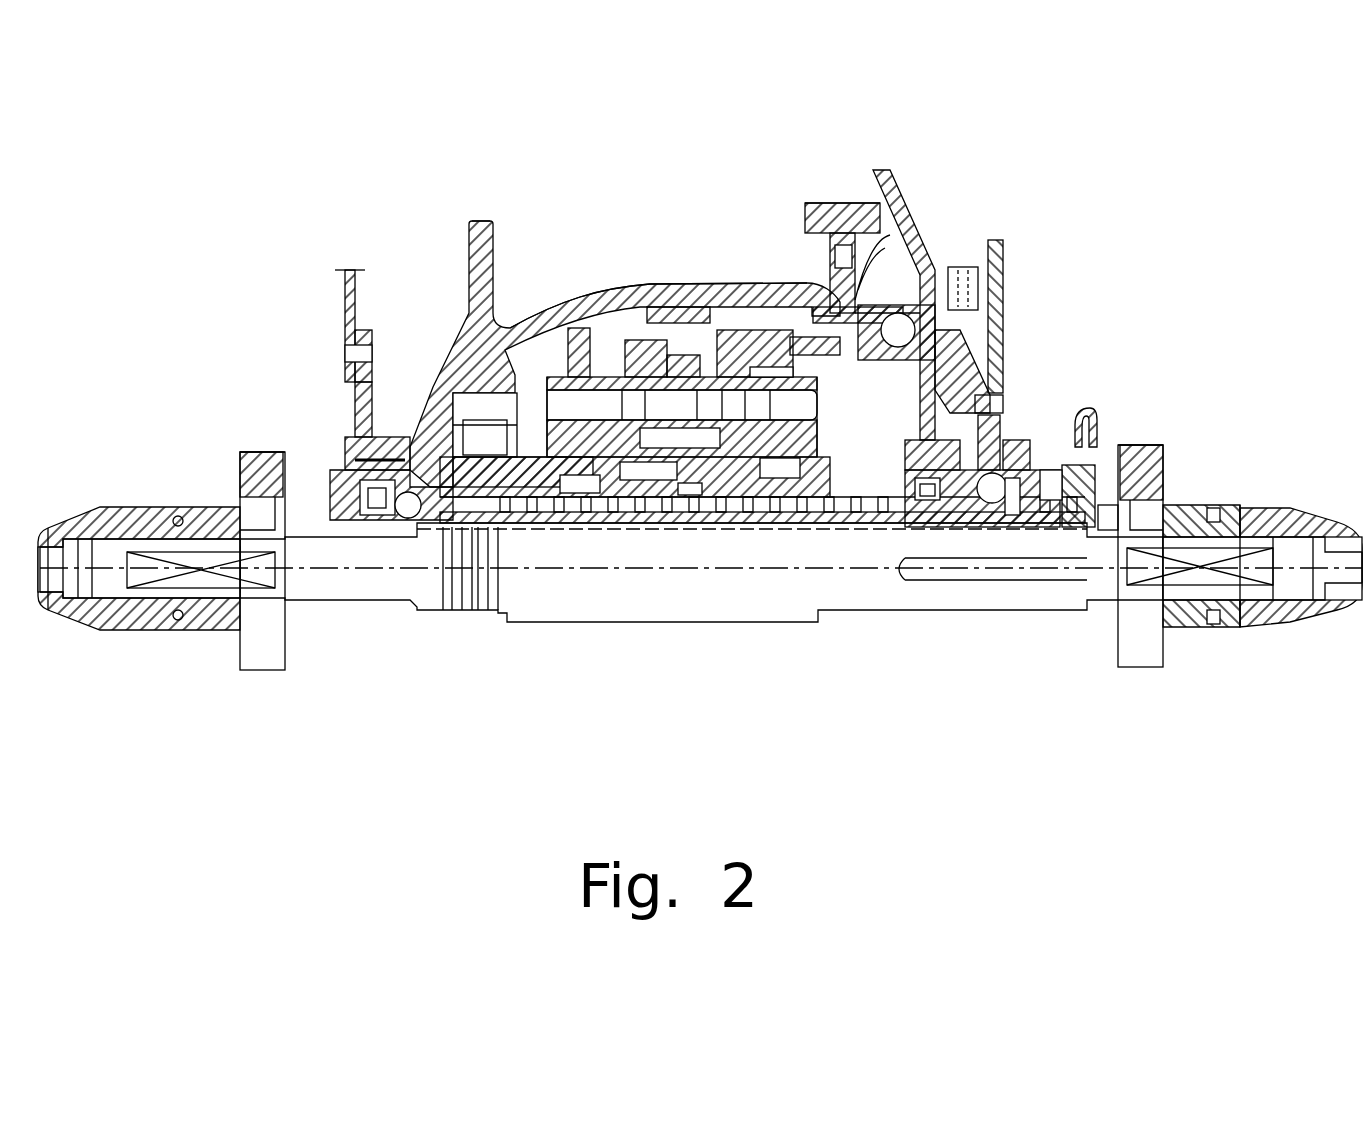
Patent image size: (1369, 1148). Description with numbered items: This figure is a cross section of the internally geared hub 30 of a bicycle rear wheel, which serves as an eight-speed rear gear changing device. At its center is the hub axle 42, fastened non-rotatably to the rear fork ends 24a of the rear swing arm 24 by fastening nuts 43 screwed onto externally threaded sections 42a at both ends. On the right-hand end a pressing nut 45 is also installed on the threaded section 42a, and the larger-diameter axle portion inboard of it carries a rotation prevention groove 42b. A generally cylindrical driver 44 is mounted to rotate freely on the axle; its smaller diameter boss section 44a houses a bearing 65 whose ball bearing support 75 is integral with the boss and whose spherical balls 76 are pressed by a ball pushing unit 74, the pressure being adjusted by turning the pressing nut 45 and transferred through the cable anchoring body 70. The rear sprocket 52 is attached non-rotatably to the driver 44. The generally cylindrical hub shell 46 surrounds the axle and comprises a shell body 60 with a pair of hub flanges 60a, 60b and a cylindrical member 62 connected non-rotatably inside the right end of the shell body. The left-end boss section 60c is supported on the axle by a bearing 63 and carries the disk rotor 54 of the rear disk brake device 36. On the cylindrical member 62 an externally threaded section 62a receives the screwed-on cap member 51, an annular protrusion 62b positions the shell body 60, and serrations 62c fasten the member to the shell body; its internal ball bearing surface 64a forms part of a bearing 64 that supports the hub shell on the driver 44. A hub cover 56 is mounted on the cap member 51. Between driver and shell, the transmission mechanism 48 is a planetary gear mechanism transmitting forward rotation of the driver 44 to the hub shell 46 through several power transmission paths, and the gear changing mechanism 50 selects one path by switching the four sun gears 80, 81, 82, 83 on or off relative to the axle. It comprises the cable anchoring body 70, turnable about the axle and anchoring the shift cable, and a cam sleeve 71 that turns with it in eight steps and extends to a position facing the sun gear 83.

The rear swing arm 24 is at (232, 466).
The rear fork ends 24a is at (260, 450).
The internally geared hub 30 is at (686, 168).
The rear disk brake device 36 is at (348, 265).
The hub axle 42 is at (1170, 505).
The externally threaded sections 42a is at (222, 632).
The rotation prevention groove 42b is at (905, 572).
The fastening nuts 43 is at (125, 506).
The driver 44 is at (1008, 384).
The boss section 44a is at (998, 450).
The pressing nut 45 is at (1102, 540).
The hub shell 46 is at (616, 250).
The transmission mechanism 48 is at (735, 315).
The gear changing mechanism 50 is at (860, 530).
The cap member 51 is at (966, 262).
The rear sprocket 52 is at (1004, 250).
The disk rotor 54 is at (358, 328).
The hub cover 56 is at (882, 195).
The shell body 60 is at (548, 297).
The hub flange 60a is at (480, 219).
The hub flange 60b is at (822, 205).
The boss section 60c is at (408, 445).
The cylindrical member 62 is at (802, 282).
The externally threaded section 62a is at (888, 260).
The annular protrusion 62b is at (858, 262).
The serrations 62c is at (808, 260).
The bearing 63 is at (388, 530).
The bearing 64 is at (906, 313).
The ball bearing surface 64a is at (992, 303).
The bearing 65 is at (990, 503).
The cable anchoring body 70 is at (1112, 440).
The cam sleeve 71 is at (1040, 520).
The ball pushing unit 74 is at (1020, 520).
The ball bearing support 75 is at (1086, 440).
The spherical balls 76 is at (975, 520).
The sun gear 80 is at (795, 510).
The sun gear 81 is at (730, 520).
The sun gear 82 is at (660, 520).
The sun gear 83 is at (548, 520).